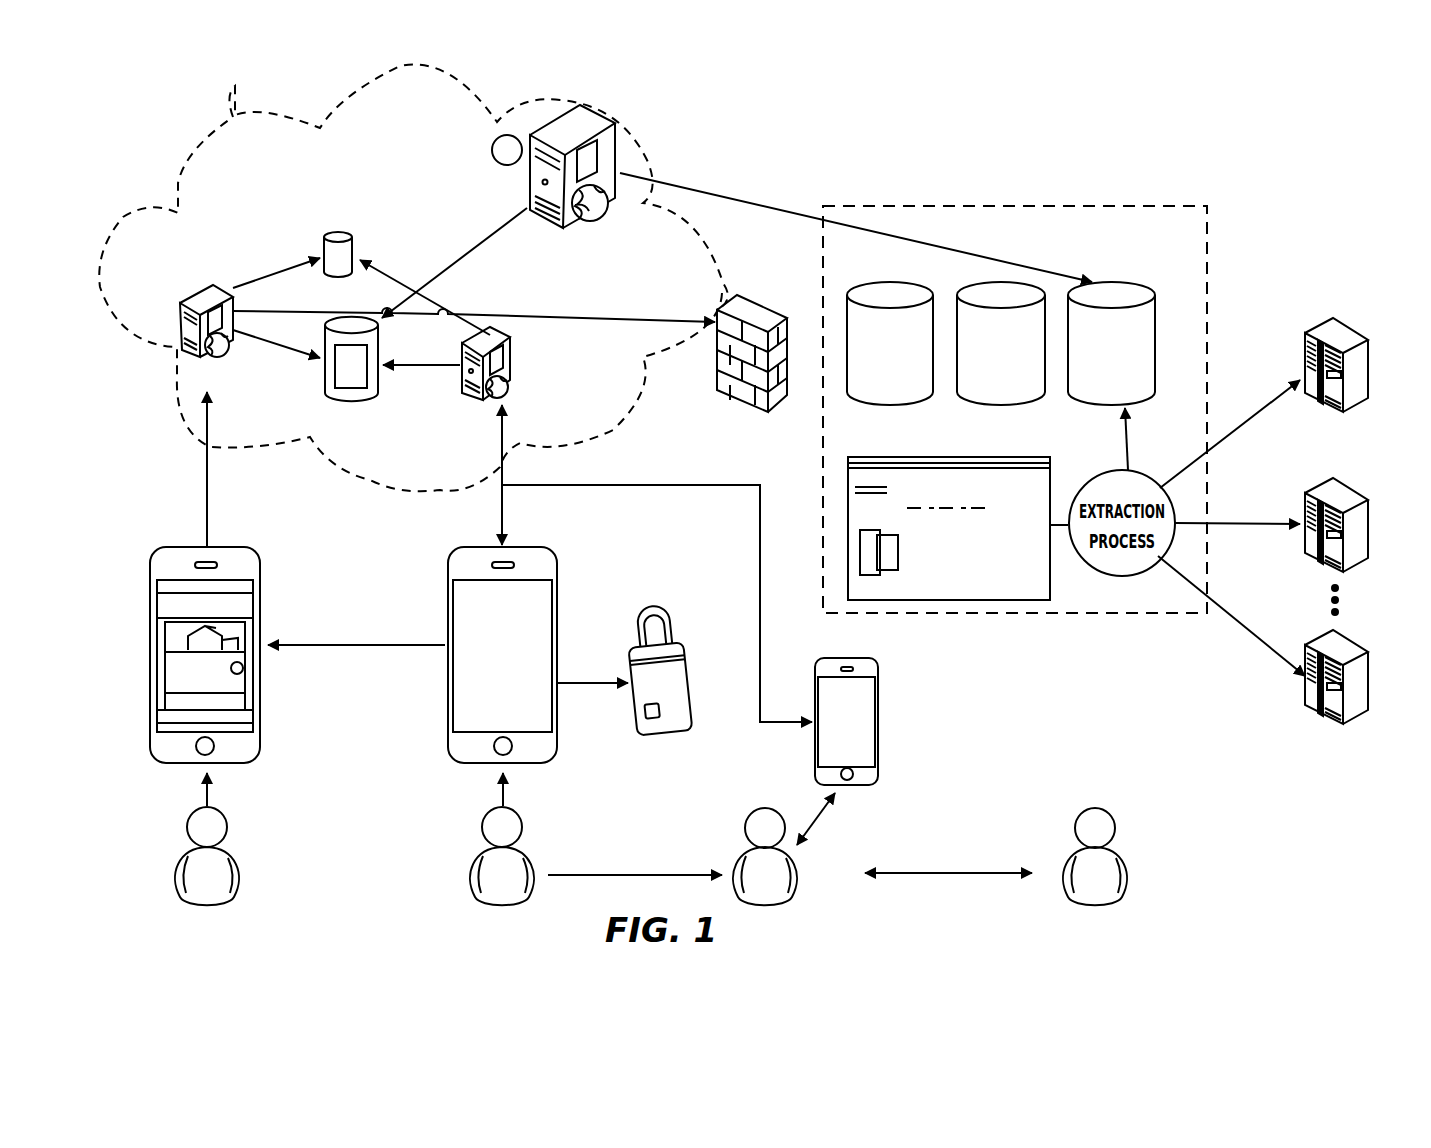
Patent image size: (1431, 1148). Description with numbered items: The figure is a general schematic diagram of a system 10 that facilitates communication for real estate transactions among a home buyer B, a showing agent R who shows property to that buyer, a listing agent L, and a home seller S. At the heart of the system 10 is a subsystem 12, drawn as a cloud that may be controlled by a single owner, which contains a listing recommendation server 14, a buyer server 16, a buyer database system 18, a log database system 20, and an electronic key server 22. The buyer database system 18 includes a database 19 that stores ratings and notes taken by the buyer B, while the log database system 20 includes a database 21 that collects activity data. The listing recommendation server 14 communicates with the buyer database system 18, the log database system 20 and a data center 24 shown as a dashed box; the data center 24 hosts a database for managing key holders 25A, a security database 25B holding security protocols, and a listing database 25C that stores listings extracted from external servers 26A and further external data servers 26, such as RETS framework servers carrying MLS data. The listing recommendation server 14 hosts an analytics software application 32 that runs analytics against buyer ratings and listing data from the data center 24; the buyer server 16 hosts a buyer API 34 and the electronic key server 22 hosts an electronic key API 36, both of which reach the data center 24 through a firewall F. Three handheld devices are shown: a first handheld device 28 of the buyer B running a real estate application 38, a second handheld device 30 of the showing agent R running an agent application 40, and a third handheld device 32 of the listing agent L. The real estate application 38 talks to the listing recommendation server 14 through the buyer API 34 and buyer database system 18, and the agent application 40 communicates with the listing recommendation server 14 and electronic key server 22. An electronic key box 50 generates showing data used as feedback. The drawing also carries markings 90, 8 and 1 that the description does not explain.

The system 10 is at (1368, 140).
The subsystem 12 is at (413, 277).
The listing recommendation server 14 is at (592, 123).
The buyer server 16 is at (203, 303).
The buyer database system 18 is at (325, 380).
The database 19 is at (351, 366).
The log database system 20 is at (338, 233).
The database 21 is at (341, 257).
The electronic key server 22 is at (467, 378).
The data center 24 is at (1162, 192).
The database for managing key holders 25A is at (890, 343).
The security database 25B is at (1001, 343).
The listing database 25C is at (1111, 343).
The external server 26A is at (1340, 338).
The external data servers 26 is at (1362, 528).
The first handheld device 28 is at (160, 703).
The second handheld device 30 is at (223, 190).
The third handheld device 32 is at (588, 165).
The buyer application program interface 34 is at (217, 323).
The electronic key API 36 is at (495, 365).
The real estate application 38 is at (205, 666).
The agent application 40 is at (502, 655).
The electronic key box 50 is at (680, 707).
The mobile application 90 is at (462, 675).
The home buyer B is at (175, 862).
The showing agent R is at (470, 862).
The listing agent L is at (797, 870).
The home seller S is at (1128, 870).
The firewall F is at (752, 353).
The server 8 is at (507, 150).
The numeral 1 is at (1407, 369).